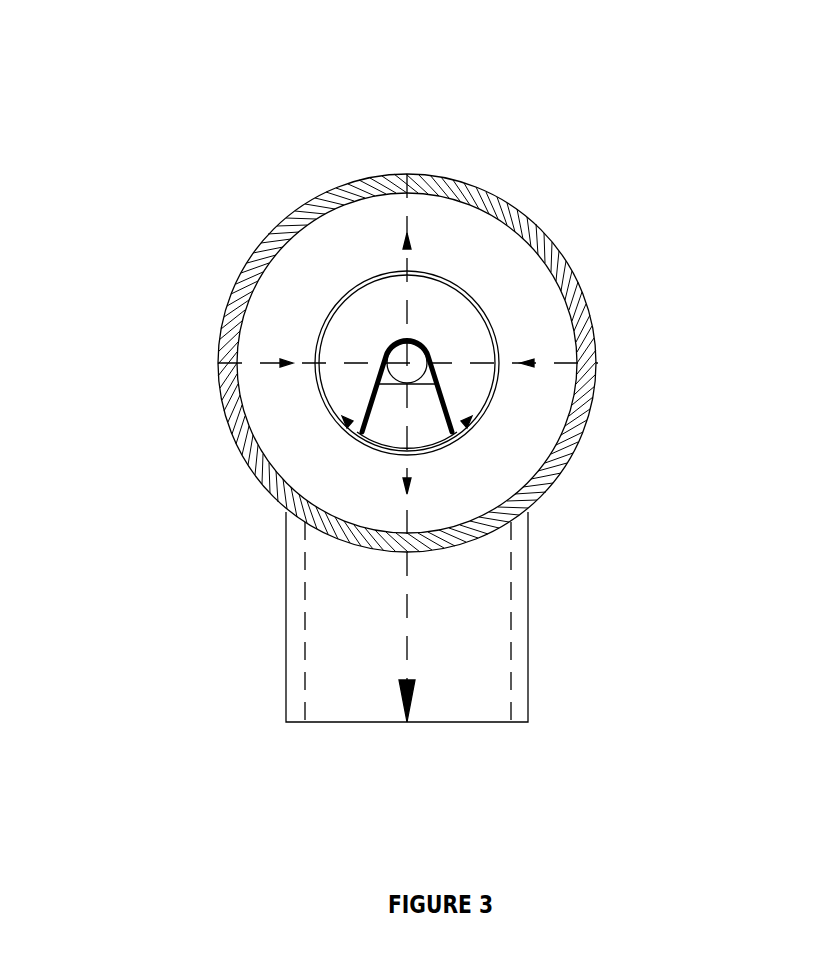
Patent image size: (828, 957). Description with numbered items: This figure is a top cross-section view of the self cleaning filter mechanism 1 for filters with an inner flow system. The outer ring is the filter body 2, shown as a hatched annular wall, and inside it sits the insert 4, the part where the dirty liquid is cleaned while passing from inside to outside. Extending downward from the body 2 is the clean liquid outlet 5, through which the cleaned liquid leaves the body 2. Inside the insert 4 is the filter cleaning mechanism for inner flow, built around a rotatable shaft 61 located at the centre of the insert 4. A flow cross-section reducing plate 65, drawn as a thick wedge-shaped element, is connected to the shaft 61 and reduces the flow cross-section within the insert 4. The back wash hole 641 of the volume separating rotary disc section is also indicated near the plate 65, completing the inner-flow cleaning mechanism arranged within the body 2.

The self cleaning filter mechanism 1 is at (203, 153).
The body 2 is at (558, 254).
The insert 4 is at (502, 382).
The clean liquid outlet 5 is at (373, 640).
The shaft 61 is at (408, 357).
The flow cross-section reducing plate 65 is at (380, 377).
The back wash hole 641 is at (418, 427).